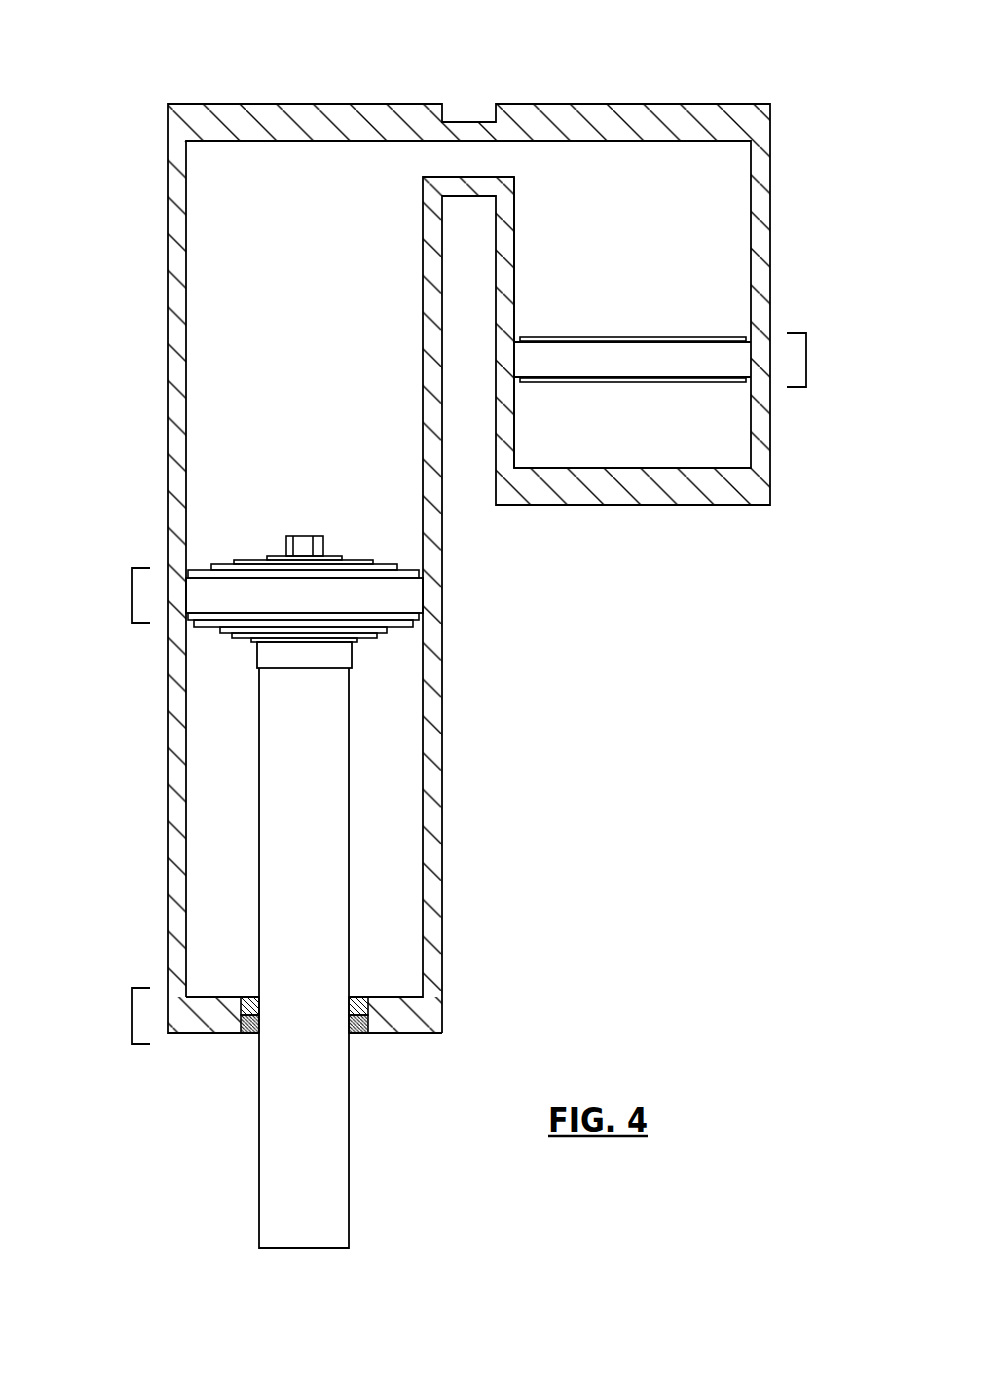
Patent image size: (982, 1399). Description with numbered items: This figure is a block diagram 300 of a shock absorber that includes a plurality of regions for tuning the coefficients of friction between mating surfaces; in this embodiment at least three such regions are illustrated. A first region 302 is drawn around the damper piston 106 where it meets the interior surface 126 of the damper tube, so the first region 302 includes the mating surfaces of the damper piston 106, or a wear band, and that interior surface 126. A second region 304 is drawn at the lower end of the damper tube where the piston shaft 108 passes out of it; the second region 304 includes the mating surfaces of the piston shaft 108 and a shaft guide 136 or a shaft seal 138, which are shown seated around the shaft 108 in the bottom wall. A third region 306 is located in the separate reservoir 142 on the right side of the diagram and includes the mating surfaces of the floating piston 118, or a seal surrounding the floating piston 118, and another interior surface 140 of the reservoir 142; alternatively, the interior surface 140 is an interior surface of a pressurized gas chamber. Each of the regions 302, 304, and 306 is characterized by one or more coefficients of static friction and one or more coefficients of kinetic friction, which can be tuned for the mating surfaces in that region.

The block diagram 300 is at (150, 82).
The interior surface 126 is at (190, 354).
The reservoir 142 is at (759, 237).
The interior surface 140 is at (517, 316).
The floating piston 118 is at (678, 368).
The third region 306 is at (706, 384).
The damper piston 106 is at (192, 588).
The first region 302 is at (230, 584).
The piston shaft 108 is at (273, 1120).
The shaft guide 136 is at (370, 1000).
The shaft seal 138 is at (368, 1032).
The second region 304 is at (283, 1009).